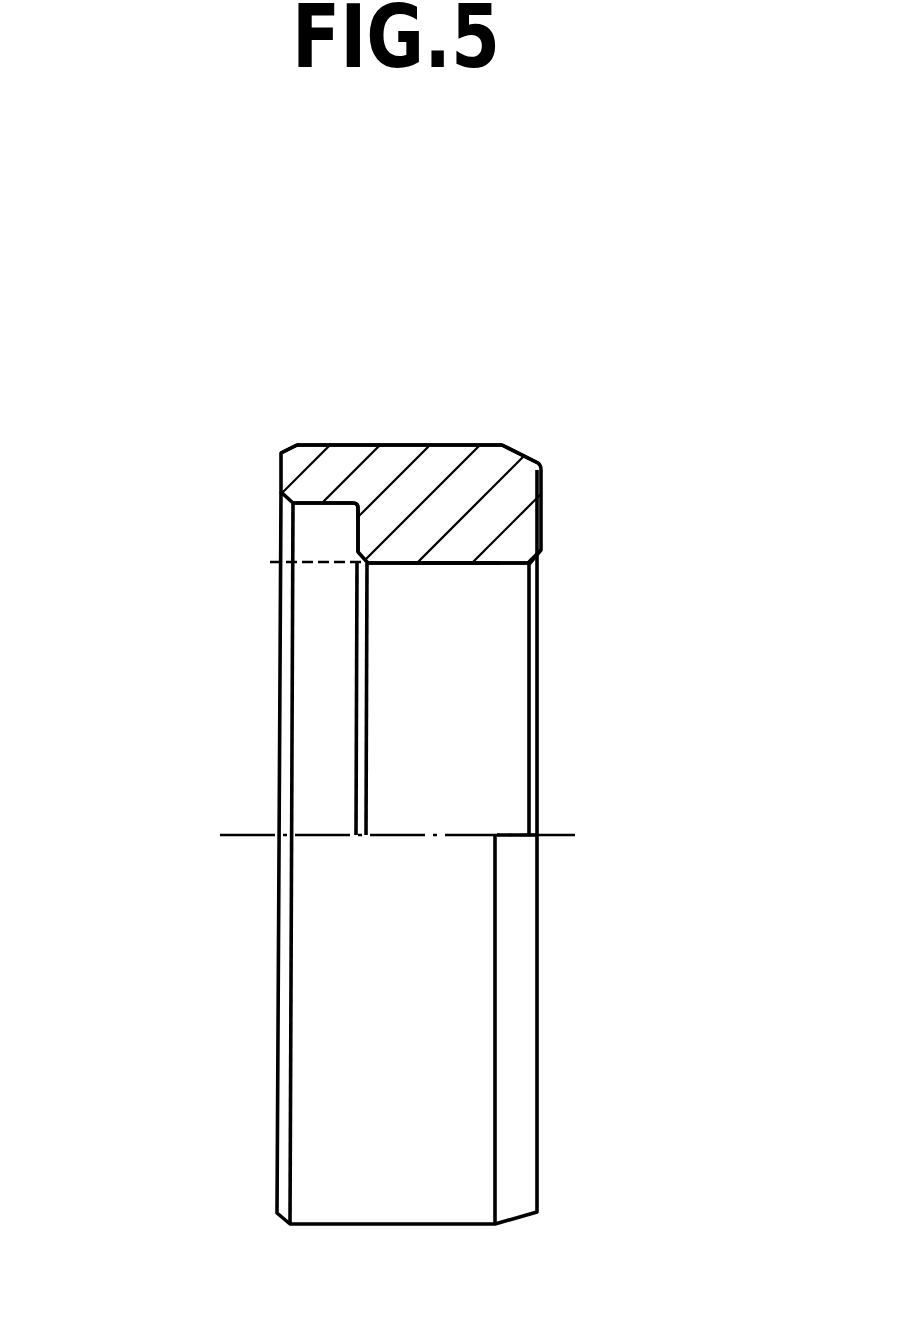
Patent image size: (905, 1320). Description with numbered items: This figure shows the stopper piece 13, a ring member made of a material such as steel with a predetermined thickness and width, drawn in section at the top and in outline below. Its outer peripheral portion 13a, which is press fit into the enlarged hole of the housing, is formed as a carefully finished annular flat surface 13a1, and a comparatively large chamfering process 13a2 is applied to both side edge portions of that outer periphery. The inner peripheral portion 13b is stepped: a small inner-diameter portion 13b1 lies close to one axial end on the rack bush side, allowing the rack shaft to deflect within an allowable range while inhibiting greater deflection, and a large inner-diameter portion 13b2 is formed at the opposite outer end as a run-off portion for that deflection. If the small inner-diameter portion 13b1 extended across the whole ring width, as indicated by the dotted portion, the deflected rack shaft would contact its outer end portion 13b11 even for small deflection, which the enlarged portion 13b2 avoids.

The stopper piece 13 is at (297, 400).
The outer peripheral portion 13a is at (473, 445).
The annular flat surface 13a1 is at (423, 446).
The chamfering process 13a2 is at (518, 456).
The inner peripheral portion 13b is at (462, 565).
The small inner-diameter portion 13b1 is at (436, 564).
The large inner-diameter portion 13b2 is at (327, 533).
The outer end portion 13b11 is at (250, 562).